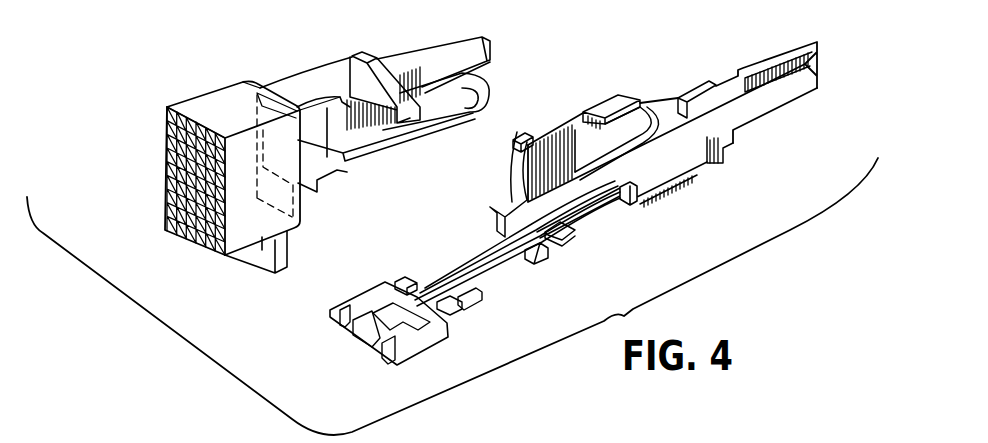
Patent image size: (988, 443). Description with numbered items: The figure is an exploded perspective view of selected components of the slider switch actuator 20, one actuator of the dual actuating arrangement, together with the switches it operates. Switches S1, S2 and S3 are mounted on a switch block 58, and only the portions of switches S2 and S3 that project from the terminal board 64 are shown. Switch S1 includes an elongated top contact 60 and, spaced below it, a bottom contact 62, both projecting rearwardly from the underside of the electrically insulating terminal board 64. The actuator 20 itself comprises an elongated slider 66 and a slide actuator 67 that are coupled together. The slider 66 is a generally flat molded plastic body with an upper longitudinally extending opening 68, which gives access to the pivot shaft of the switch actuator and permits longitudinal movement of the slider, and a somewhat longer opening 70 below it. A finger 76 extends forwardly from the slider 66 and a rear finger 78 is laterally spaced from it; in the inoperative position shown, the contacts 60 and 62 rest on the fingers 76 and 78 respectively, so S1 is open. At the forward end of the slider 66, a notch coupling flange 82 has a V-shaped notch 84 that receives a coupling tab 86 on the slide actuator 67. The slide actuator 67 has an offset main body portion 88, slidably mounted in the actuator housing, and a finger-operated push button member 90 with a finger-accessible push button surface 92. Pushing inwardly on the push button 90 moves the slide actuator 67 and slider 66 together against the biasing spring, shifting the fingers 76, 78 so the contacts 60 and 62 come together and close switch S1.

The slider switch actuator 20 is at (585, 49).
The switch block 58 is at (439, 354).
The top contact 60 is at (386, 174).
The bottom contact 62 is at (510, 252).
The terminal board 64 is at (360, 299).
The elongated slider 66 is at (597, 96).
The slide actuator 67 is at (365, 53).
The upper longitudinally extending opening 68 is at (647, 108).
The longer opening 70 is at (665, 178).
The finger 76 is at (535, 256).
The rear finger 78 is at (562, 240).
The notch coupling flange 82 is at (490, 215).
The V-shaped notch 84 is at (525, 133).
The coupling tab 86 is at (440, 80).
The main body portion 88 is at (318, 98).
The push button member 90 is at (238, 233).
The push button surface 92 is at (167, 182).
The switch S1 is at (413, 270).
The switch S2 is at (464, 294).
The switch S3 is at (468, 314).